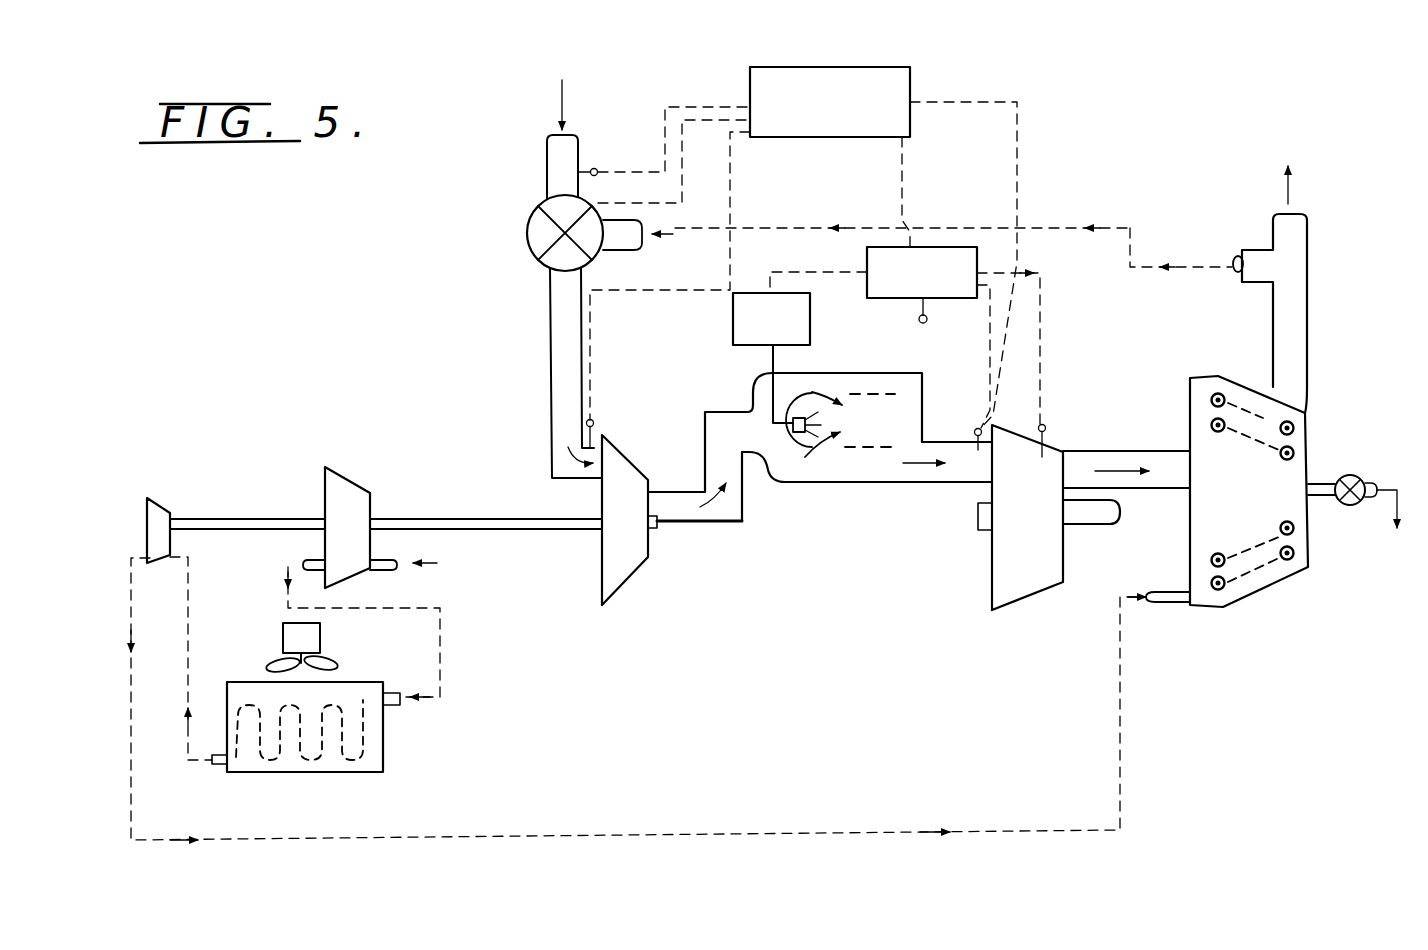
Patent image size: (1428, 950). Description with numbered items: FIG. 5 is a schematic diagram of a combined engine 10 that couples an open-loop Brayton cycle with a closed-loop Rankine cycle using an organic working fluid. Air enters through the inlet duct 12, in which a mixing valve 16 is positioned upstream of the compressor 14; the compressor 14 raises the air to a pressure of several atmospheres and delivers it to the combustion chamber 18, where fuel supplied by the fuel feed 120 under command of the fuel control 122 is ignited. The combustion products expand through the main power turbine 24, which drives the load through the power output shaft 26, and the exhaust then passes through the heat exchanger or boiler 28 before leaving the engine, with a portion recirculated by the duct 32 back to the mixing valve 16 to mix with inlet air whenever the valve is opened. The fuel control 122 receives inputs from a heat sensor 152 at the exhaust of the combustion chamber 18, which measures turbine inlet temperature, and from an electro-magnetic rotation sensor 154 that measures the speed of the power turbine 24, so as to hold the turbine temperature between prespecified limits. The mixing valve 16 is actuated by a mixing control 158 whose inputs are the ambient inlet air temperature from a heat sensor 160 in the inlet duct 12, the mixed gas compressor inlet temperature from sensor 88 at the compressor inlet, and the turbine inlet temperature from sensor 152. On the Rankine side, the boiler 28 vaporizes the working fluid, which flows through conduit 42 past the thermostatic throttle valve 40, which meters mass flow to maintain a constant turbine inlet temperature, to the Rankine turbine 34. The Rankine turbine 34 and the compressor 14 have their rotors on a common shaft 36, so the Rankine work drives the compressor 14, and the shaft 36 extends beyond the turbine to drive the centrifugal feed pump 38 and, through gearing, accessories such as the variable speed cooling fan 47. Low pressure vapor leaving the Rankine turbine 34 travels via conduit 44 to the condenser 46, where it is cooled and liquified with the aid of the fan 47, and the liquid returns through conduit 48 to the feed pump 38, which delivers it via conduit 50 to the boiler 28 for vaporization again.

The combined engine 10 is at (505, 352).
The inlet duct 12 is at (546, 157).
The compressor 14 is at (625, 587).
The mixing valve 16 is at (527, 243).
The combustion chamber 18 is at (775, 485).
The main power turbine 24 is at (990, 570).
The output shaft 26 is at (1120, 511).
The heat exchanger (boiler) 28 is at (1190, 412).
The recirculation duct 32 is at (622, 251).
The Rankine turbine 34 is at (373, 493).
The common shaft 36 is at (483, 518).
The centrifugal feed pump 38 is at (175, 517).
The thermostatic throttle valve 40 is at (1360, 474).
The conduit 42 is at (1323, 483).
The conduit 44 is at (300, 562).
The condenser 46 is at (225, 773).
The cooling fan 47 is at (283, 637).
The conduit 48 is at (218, 766).
The conduit 50 is at (145, 668).
The sensor 88 is at (595, 420).
The fuel feed 120 is at (732, 302).
The fuel control mechanism 122 is at (890, 300).
The heat sensor 152 is at (973, 430).
The electro-magnetic rotation sensor 154 is at (1048, 426).
The mixing control 158 is at (905, 53).
The heat sensor 160 is at (597, 167).